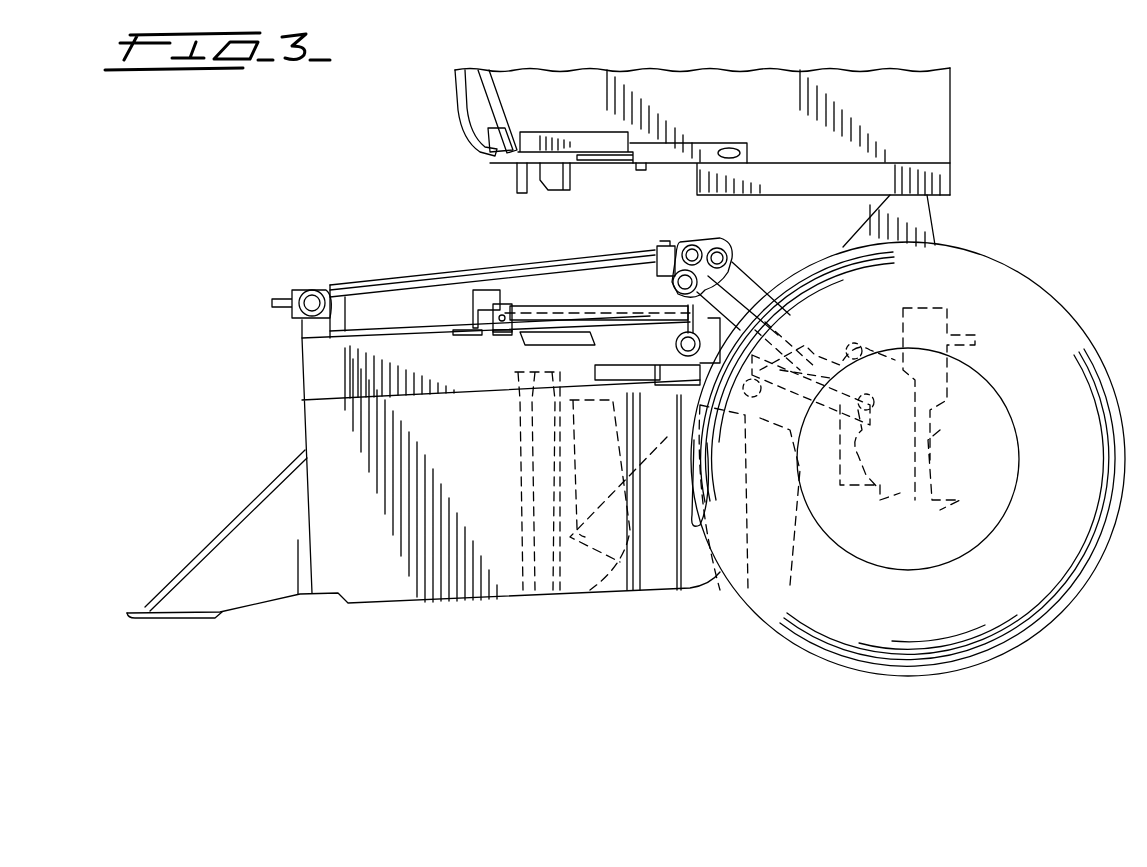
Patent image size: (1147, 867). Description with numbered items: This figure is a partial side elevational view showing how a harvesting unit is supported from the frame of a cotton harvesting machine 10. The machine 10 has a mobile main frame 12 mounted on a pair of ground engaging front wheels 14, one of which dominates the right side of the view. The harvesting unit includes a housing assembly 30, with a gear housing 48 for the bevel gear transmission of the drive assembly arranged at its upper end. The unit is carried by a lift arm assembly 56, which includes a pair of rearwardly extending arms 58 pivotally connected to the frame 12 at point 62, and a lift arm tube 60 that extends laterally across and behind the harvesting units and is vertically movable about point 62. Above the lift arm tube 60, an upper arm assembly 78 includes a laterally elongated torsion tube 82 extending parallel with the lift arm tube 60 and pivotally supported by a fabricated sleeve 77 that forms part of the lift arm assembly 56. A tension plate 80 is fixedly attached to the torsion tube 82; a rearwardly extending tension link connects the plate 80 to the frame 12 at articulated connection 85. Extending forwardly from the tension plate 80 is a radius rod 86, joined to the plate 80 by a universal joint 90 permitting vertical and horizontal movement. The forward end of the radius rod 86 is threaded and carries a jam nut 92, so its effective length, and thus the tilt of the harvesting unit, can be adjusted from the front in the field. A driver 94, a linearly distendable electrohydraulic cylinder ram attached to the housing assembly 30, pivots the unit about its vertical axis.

The cotton harvesting machine 10 is at (968, 116).
The mobile main frame 12 is at (741, 78).
The ground engaging front wheel 14 is at (1078, 537).
The housing assembly 30 is at (388, 348).
The gear housing 48 is at (475, 298).
The lift arm assembly 56 is at (790, 330).
The rearwardly extending arm 58 is at (805, 395).
The lift arm tube 60 is at (676, 345).
The pivot point 62 is at (862, 430).
The fabricated sleeve 77 is at (657, 339).
The upper arm assembly 78 is at (719, 232).
The tension plate 80 is at (724, 242).
The torsion tube 82 is at (672, 283).
The articulated connection 85 is at (860, 343).
The radius rod 86 is at (578, 266).
The universal joint 90 is at (666, 233).
The jam nut 92 is at (302, 292).
The driver 94 is at (588, 312).